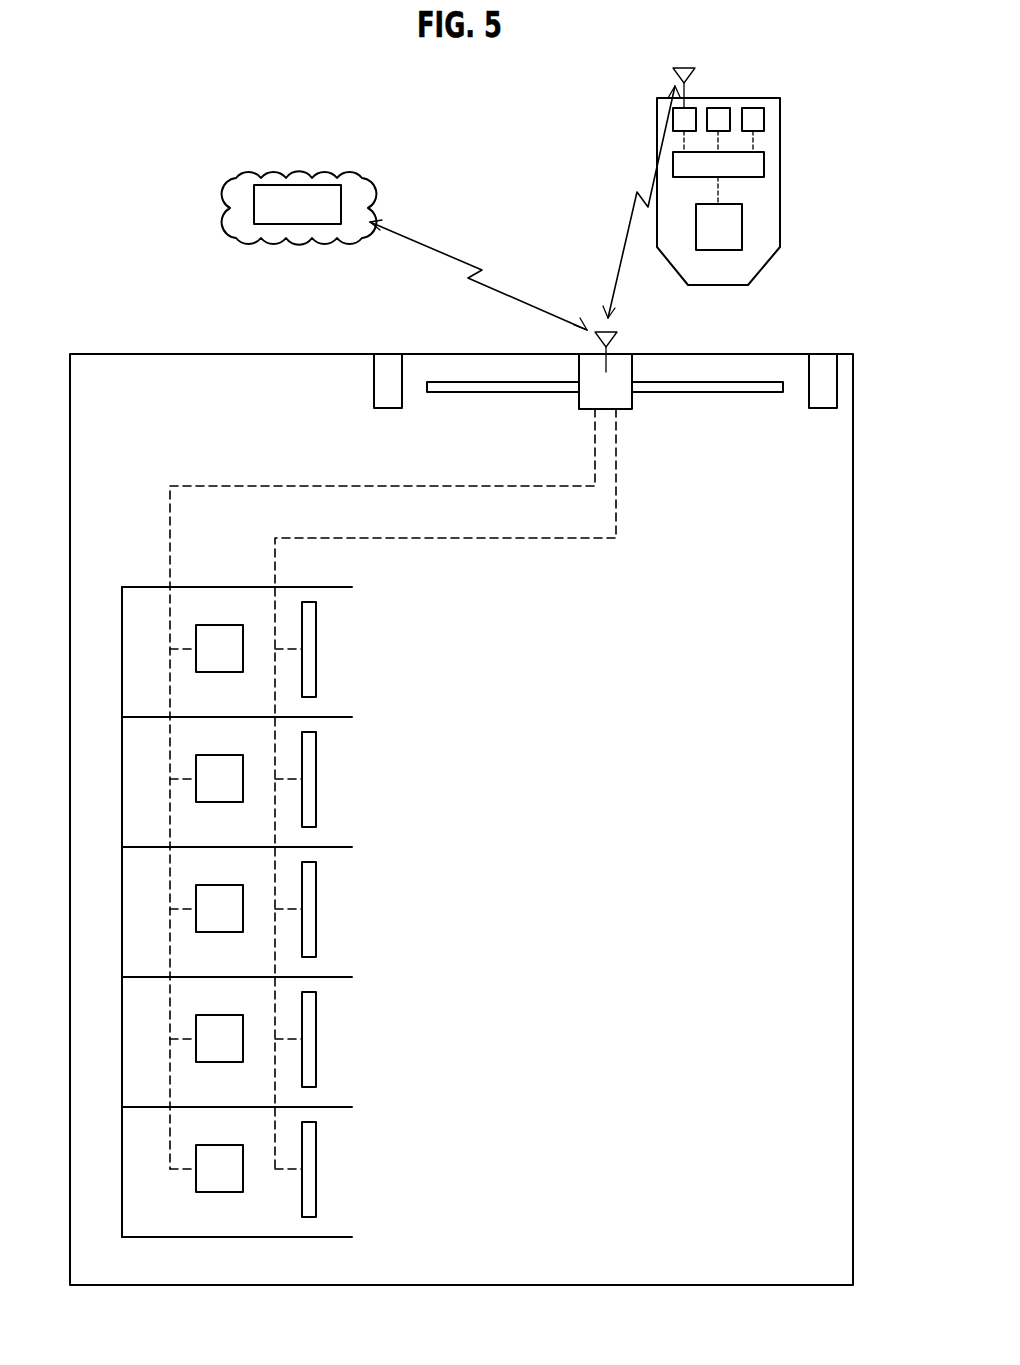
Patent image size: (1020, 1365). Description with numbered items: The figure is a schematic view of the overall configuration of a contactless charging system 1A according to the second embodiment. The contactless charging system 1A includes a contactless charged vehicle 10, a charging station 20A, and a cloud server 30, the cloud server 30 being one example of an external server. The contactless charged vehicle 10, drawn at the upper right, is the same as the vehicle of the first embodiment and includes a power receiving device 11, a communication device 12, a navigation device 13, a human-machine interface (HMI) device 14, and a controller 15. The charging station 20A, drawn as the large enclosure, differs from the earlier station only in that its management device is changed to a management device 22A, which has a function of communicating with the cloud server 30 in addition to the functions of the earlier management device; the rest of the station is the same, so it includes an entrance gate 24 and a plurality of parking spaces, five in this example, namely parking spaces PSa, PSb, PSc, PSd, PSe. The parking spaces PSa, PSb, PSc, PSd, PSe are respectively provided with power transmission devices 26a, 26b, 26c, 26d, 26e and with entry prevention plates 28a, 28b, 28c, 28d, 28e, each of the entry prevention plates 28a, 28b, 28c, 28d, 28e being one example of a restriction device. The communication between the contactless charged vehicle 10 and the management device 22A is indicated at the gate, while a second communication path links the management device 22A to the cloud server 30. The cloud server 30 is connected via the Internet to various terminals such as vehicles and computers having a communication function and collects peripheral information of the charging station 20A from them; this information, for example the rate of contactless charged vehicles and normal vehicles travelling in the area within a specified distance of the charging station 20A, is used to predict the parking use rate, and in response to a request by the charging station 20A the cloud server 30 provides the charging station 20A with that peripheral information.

The contactless charging system 1A is at (375, 112).
The contactless charged vehicle 10 is at (748, 161).
The power receiving device 11 is at (742, 222).
The communication device 12 is at (692, 108).
The navigation device 13 is at (719, 108).
The human-machine interface (HMI) device 14 is at (752, 108).
The controller 15 is at (764, 165).
The cloud server 30 is at (331, 185).
The charging station 20A is at (250, 352).
The management device 22A is at (579, 400).
The entrance gate 24 is at (710, 392).
The power transmission device 26a is at (208, 672).
The power transmission device 26b is at (208, 802).
The power transmission device 26c is at (208, 932).
The power transmission device 26d is at (208, 1062).
The power transmission device 26e is at (208, 1192).
The entry prevention plate 28a is at (316, 648).
The entry prevention plate 28b is at (316, 778).
The entry prevention plate 28c is at (316, 908).
The entry prevention plate 28d is at (316, 1038).
The entry prevention plate 28e is at (316, 1168).
The parking space PSa is at (309, 646).
The parking space PSb is at (309, 776).
The parking space PSc is at (309, 906).
The parking space PSd is at (309, 1036).
The parking space PSe is at (309, 1166).